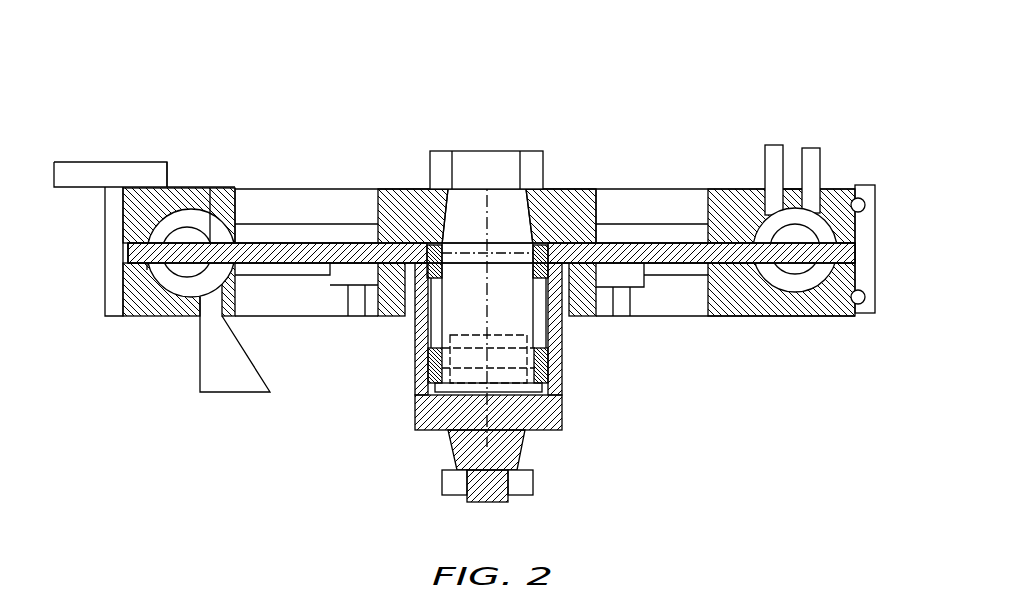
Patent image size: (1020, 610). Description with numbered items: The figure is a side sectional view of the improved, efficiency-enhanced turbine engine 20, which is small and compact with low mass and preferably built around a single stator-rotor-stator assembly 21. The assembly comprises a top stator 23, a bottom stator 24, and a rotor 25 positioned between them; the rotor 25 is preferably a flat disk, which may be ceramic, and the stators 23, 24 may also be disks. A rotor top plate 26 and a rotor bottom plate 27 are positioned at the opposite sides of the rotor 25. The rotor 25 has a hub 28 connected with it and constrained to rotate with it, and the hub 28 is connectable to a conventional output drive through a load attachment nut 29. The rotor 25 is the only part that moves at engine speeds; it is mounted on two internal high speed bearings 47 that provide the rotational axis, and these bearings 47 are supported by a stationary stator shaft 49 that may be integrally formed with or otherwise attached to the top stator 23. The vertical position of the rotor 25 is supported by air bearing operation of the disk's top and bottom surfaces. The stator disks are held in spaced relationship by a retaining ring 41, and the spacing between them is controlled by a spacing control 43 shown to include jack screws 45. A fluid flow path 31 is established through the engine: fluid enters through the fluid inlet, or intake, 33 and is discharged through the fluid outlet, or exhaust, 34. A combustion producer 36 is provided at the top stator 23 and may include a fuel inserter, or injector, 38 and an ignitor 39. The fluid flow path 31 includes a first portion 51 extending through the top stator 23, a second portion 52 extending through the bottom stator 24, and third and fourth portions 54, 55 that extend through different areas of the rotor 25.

The turbine engine 20 is at (427, 160).
The stator-rotor-stator assembly 21 is at (216, 205).
The top stator 23 is at (355, 213).
The bottom stator 24 is at (270, 307).
The rotor 25 is at (623, 240).
The rotor top plate 26 is at (848, 238).
The rotor bottom plate 27 is at (830, 316).
The hub 28 is at (563, 393).
The load attachment nut 29 is at (535, 476).
The fluid flow path 31 is at (158, 282).
The fluid inlet (intake) 33 is at (228, 383).
The fluid outlet (exhaust) 34 is at (112, 162).
The combustion producer 36 is at (793, 140).
The fuel injector 38 is at (770, 168).
The ignitor 39 is at (808, 147).
The retaining ring 41 is at (866, 314).
The spacing control 43 is at (881, 200).
The jack screws 45 is at (880, 362).
The high speed bearings 47 is at (430, 378).
The stator shaft 49 is at (508, 160).
The first portion of fluid flow path 51 is at (187, 212).
The second portion of fluid flow path 52 is at (183, 297).
The third portion of fluid flow path 54 is at (213, 225).
The fourth portion of fluid flow path 55 is at (170, 210).